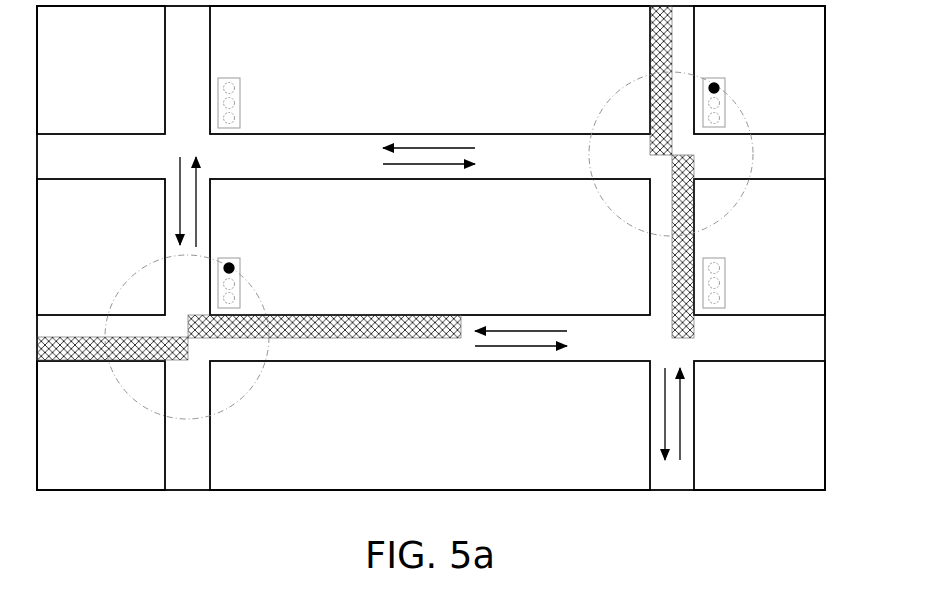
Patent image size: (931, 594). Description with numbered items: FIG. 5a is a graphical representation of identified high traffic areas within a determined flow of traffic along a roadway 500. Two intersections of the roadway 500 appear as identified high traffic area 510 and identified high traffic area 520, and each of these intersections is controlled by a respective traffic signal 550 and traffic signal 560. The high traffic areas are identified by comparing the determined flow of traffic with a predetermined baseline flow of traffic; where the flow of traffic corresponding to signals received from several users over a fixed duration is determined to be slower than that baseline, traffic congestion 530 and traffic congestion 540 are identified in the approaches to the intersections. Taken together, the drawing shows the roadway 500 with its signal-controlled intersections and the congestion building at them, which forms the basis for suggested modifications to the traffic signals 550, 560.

The roadway 500 is at (533, 131).
The identified high traffic area 510 is at (255, 390).
The identified high traffic area 520 is at (740, 203).
The traffic congestion 530 is at (188, 352).
The traffic congestion 540 is at (650, 155).
The traffic signal 550 is at (240, 265).
The traffic signal 560 is at (725, 80).